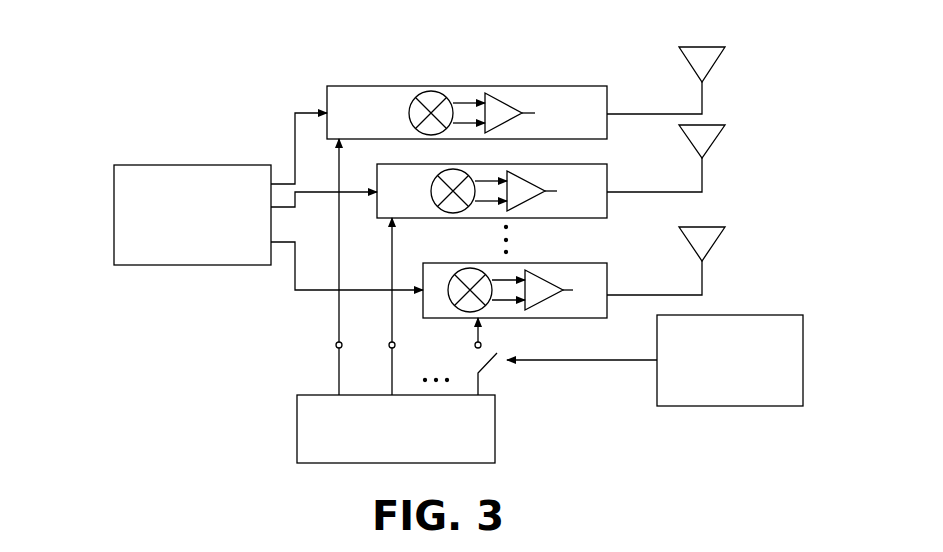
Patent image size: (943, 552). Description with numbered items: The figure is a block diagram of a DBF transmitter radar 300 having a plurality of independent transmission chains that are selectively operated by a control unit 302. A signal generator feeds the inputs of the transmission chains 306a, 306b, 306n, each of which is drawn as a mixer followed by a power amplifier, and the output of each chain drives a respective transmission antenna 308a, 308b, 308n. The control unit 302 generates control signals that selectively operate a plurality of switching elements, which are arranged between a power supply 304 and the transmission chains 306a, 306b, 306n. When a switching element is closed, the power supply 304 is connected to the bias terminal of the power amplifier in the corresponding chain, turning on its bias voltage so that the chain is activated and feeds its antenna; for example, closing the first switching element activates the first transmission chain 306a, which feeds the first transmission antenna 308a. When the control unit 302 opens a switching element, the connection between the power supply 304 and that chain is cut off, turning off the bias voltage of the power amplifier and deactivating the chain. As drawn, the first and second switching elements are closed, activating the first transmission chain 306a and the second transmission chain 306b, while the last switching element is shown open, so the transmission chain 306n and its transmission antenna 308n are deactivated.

The DBF transmitter radar 300 is at (110, 84).
The control unit 302 is at (730, 360).
The power supply 304 is at (396, 429).
The first transmission chain 306a is at (607, 87).
The second transmission chain 306b is at (607, 164).
The transmission chain 306n is at (607, 263).
The first transmission antenna 308a is at (722, 46).
The transmission antenna 308b is at (722, 124).
The transmission antenna 308n is at (722, 226).